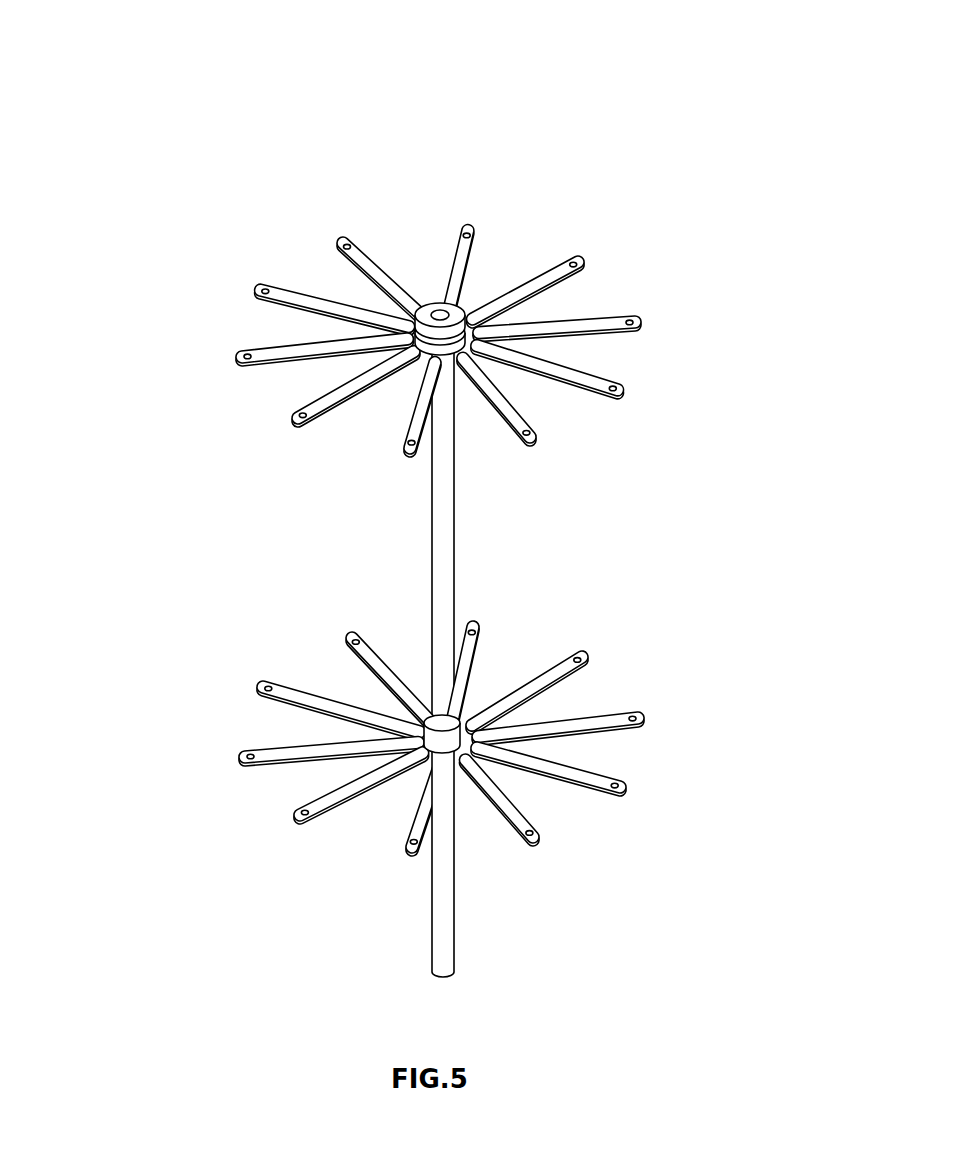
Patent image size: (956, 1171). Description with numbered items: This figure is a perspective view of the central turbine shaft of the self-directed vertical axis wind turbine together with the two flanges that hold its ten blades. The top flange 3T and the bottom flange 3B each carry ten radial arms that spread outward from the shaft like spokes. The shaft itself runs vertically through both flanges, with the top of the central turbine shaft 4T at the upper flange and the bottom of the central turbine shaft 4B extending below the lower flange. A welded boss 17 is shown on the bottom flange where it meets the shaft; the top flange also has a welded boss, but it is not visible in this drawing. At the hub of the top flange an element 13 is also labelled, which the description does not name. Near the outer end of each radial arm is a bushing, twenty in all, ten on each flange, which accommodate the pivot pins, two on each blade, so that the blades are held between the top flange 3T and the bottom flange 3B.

The top flange 3T is at (474, 341).
The bottom flange 3B is at (369, 734).
The top of central turbine shaft 4T is at (440, 314).
The bottom of central turbine shaft 4B is at (445, 935).
The washer / top hub 13 is at (418, 313).
The welded boss 17 is at (460, 726).